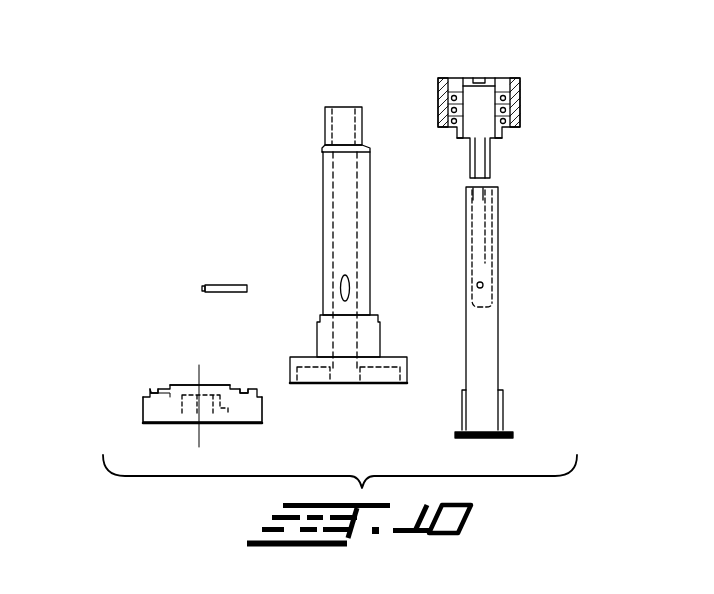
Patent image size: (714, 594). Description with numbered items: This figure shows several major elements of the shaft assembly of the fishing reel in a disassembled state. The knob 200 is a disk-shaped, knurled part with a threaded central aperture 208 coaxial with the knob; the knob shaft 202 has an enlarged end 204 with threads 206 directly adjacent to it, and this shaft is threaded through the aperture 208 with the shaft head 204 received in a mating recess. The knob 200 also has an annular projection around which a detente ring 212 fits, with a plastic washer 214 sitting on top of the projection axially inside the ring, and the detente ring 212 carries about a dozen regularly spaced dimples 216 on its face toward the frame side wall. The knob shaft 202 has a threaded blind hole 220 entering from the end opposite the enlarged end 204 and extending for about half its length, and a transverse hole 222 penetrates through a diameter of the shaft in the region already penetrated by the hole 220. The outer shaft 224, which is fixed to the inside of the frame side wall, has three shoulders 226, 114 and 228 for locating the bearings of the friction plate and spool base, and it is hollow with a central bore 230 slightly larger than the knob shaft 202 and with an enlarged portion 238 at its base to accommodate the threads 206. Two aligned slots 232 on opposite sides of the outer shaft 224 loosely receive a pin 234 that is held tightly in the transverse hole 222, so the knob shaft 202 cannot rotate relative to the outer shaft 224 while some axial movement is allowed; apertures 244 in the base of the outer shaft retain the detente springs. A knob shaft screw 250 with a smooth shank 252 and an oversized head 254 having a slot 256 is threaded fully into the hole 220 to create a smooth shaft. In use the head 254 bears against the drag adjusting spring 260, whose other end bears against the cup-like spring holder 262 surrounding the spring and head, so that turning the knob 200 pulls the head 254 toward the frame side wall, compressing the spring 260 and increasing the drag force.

The second shoulder 114 is at (375, 318).
The knob 200 is at (143, 407).
The knob shaft 202 is at (498, 315).
The enlarged end 204 is at (513, 430).
The threads 206 is at (503, 400).
The aperture 208 is at (200, 423).
The detente ring 212 is at (150, 391).
The plastic washer 214 is at (183, 386).
The dimples 216 is at (156, 388).
The threaded blind hole 220 is at (485, 187).
The transverse hole 222 is at (483, 282).
The outer shaft 224 is at (320, 178).
The first shoulder 226 is at (395, 356).
The third shoulder 228 is at (321, 148).
The central bore 230 is at (337, 208).
The slots 232 is at (341, 275).
The pin 234 is at (213, 284).
The enlarged portion 238 is at (350, 385).
The apertures 244 is at (305, 385).
The knob shaft screw 250 is at (505, 110).
The smooth shank 252 is at (520, 93).
The oversized head 254 is at (498, 78).
The slot 256 is at (479, 78).
The drag adjusting spring 260 is at (440, 80).
The spring holder 262 is at (445, 100).